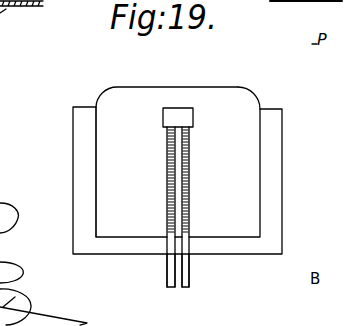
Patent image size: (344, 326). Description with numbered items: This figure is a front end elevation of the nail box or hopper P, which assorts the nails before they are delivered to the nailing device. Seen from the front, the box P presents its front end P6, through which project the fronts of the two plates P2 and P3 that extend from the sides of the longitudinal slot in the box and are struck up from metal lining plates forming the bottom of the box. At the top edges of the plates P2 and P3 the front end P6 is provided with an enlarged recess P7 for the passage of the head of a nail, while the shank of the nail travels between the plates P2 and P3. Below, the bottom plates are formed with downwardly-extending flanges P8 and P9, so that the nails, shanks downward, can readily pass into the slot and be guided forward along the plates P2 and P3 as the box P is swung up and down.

The nail-box P is at (153, 170).
The plate P2 is at (108, 179).
The plate P3 is at (183, 176).
The front end P6 is at (247, 97).
The enlarged recess P7 is at (178, 108).
The downwardly-extending flange P8 is at (167, 281).
The downwardly-extending flange P9 is at (185, 285).